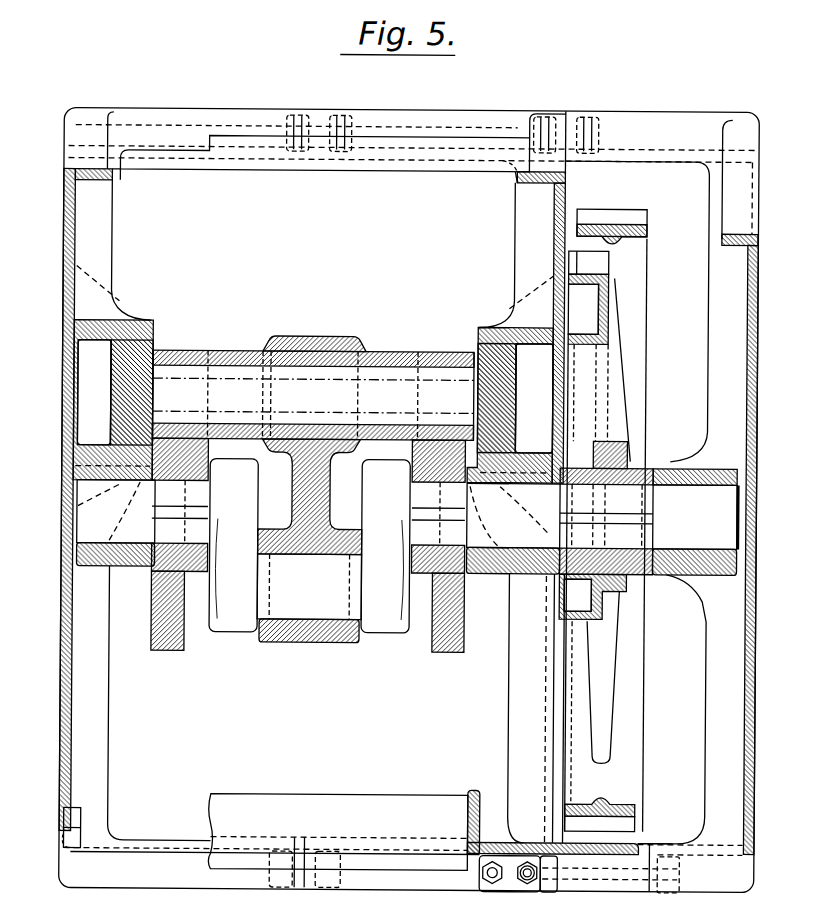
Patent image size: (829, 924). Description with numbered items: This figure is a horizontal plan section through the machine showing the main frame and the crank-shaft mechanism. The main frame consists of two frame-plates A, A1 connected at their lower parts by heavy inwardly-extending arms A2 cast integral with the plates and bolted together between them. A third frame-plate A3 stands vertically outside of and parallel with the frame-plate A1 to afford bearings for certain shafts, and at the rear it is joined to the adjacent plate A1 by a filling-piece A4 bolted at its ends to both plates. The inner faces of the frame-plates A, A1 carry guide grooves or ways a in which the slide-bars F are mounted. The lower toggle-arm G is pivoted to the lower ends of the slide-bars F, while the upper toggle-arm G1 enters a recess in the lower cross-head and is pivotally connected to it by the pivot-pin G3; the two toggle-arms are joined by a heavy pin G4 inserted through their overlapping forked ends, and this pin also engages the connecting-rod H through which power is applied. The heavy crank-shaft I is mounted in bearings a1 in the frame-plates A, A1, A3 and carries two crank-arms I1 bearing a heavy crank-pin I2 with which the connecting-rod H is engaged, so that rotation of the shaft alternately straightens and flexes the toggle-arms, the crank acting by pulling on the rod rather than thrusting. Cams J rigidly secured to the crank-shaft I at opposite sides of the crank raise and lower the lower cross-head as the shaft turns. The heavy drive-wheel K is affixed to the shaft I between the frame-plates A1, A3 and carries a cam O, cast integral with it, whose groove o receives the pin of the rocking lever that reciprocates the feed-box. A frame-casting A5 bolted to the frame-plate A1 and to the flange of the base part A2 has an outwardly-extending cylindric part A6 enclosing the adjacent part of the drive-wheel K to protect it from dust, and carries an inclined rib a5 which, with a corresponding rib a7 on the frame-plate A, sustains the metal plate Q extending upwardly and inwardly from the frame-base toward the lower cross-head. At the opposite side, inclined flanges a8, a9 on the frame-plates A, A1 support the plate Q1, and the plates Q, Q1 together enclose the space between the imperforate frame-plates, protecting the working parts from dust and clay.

The frame-plate A is at (110, 242).
The frame-plate A1 is at (535, 708).
The inwardly-extending arms A2 is at (220, 120).
The third frame-plate A3 is at (659, 487).
The filling-piece A4 is at (610, 868).
The frame-casting A5 is at (536, 838).
The cylindric part A6 is at (620, 842).
The guide grooves or ways a is at (106, 346).
The bearings a1 is at (100, 467).
The inclined rib a5 is at (477, 790).
The inclined rib a7 is at (84, 824).
The inclined flange a8 is at (119, 180).
The inclined flange a9 is at (513, 181).
The slide-bars F is at (118, 387).
The toggle-arm G is at (192, 353).
The upper toggle-arm G1 is at (247, 353).
The pivot-pin G3 is at (402, 353).
The pin G4 is at (314, 388).
The connecting-rod H is at (294, 479).
The crank-shaft I is at (407, 520).
The crank-arms I1 is at (309, 546).
The crank-pin I2 is at (309, 598).
The cams J is at (156, 607).
The drive-wheel K is at (635, 312).
The cam O is at (592, 270).
The groove o is at (594, 286).
The metal plate Q is at (338, 832).
The plate Q1 is at (414, 172).